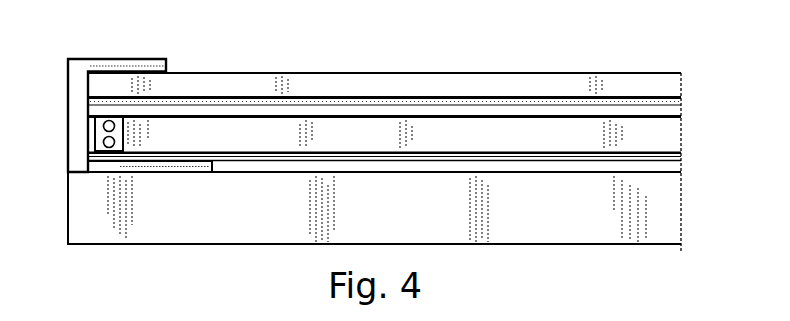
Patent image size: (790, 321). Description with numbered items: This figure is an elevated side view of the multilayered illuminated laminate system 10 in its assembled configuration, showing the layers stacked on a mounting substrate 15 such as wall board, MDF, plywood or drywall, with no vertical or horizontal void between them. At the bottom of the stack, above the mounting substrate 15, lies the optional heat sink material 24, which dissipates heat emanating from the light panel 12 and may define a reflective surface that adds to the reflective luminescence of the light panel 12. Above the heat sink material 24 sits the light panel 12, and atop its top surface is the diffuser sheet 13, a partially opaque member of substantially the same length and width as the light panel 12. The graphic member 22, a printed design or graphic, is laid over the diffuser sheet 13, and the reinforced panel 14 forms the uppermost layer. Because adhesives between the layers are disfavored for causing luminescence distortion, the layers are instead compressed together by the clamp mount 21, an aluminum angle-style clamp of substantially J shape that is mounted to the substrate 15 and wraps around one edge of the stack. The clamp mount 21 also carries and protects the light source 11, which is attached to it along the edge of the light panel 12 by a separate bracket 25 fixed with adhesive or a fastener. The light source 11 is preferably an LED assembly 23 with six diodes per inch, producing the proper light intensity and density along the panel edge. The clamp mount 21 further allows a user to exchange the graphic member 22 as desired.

The multilayered illuminated laminate system 10 is at (75, 38).
The light source 11 is at (88, 118).
The light panel 12 is at (670, 135).
The diffuser sheet 13 is at (670, 112).
The reinforced panel 14 is at (670, 85).
The mounting substrate 15 is at (670, 210).
The clamp mount 21 is at (72, 87).
The graphic member 22 is at (670, 103).
The LED assembly 23 is at (93, 127).
The heat sink material 24 is at (670, 157).
The bracket 25 is at (88, 151).